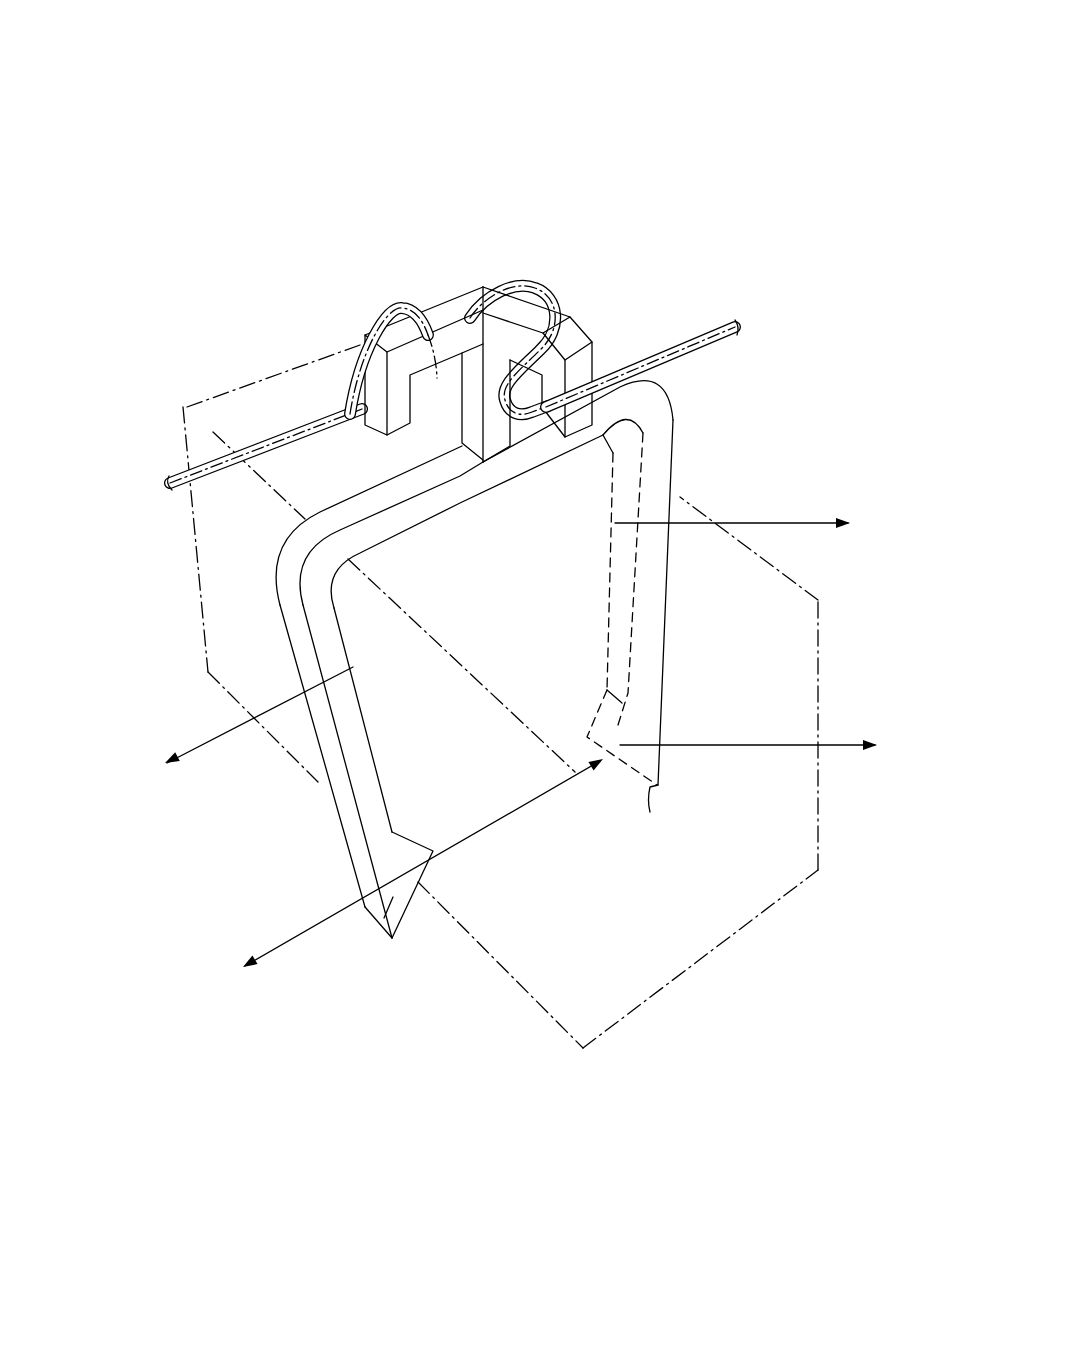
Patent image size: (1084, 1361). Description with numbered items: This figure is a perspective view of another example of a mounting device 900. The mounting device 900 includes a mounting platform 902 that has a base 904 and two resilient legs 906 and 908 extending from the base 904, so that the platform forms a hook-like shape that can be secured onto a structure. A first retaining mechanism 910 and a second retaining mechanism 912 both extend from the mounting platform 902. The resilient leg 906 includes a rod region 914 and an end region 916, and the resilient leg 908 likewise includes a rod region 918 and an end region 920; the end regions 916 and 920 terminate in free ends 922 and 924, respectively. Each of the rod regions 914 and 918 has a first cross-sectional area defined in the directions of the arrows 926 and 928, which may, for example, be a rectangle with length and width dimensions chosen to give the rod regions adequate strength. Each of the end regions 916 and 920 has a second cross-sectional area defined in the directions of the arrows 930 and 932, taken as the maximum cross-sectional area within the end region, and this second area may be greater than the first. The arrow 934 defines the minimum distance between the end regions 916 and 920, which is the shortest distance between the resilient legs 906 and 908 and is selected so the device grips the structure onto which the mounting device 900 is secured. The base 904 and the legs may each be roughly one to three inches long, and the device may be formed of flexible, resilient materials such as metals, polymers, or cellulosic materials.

The mounting device 900 is at (590, 143).
The mounting platform 902 is at (506, 663).
The base 904 is at (348, 487).
The resilient leg 906 is at (312, 775).
The resilient leg 908 is at (683, 603).
The first retaining mechanism 910 is at (437, 293).
The second retaining mechanism 912 is at (453, 311).
The rod region 914 is at (305, 745).
The end region 916 is at (393, 898).
The rod region 918 is at (660, 568).
The end region 920 is at (648, 732).
The free end 922 is at (398, 934).
The free end 924 is at (650, 812).
The arrow 926 is at (213, 737).
The arrow 928 is at (740, 522).
The arrow 930 is at (290, 940).
The arrow 932 is at (837, 748).
The arrow 934 is at (512, 815).